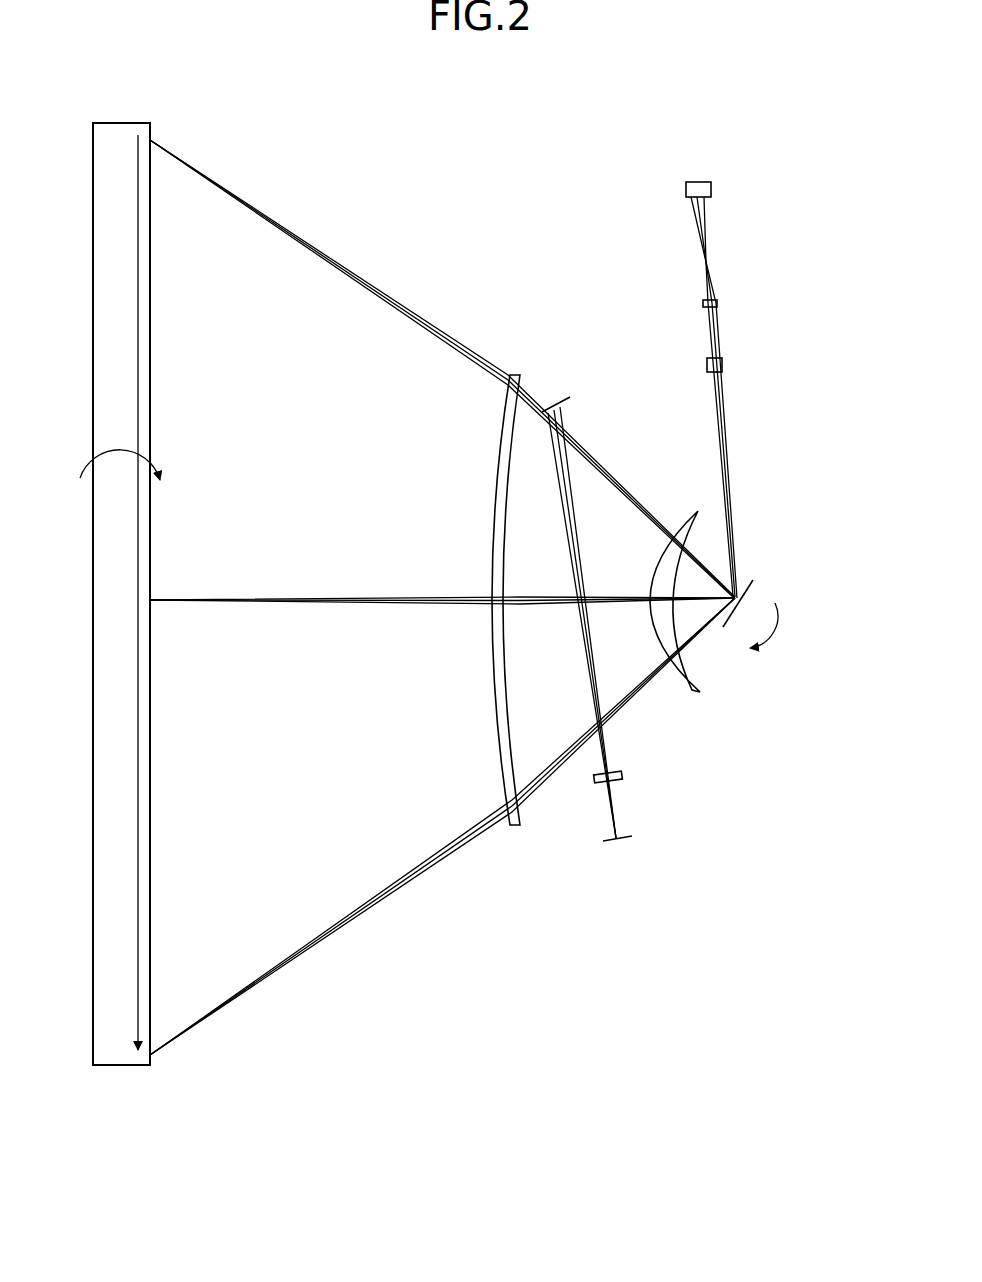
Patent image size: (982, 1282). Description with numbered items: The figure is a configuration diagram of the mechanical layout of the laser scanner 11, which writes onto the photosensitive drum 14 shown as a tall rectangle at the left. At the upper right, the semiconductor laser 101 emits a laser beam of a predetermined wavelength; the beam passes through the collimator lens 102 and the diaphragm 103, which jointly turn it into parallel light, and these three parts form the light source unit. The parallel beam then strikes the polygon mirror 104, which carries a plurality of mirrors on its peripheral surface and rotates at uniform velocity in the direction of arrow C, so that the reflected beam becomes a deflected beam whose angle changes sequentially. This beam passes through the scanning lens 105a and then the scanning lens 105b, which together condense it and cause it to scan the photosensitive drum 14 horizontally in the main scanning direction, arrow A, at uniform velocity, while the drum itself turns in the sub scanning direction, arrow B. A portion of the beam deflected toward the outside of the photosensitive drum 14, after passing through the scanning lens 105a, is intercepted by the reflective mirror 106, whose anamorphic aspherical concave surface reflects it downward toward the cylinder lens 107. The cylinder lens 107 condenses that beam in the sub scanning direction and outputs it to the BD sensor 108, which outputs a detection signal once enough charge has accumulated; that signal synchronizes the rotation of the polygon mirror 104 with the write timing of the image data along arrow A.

The photosensitive drum 14 is at (151, 124).
The laser scanner 11 is at (527, 214).
The semiconductor laser 101 is at (713, 188).
The collimator lens 102 is at (719, 304).
The diaphragm 103 is at (724, 366).
The polygon mirror 104 is at (740, 595).
The scanning lens 105a is at (714, 686).
The scanning lens 105b is at (522, 836).
The reflective mirror 106 is at (558, 392).
The cylinder lens 107 is at (634, 772).
The BD sensor 108 is at (634, 843).